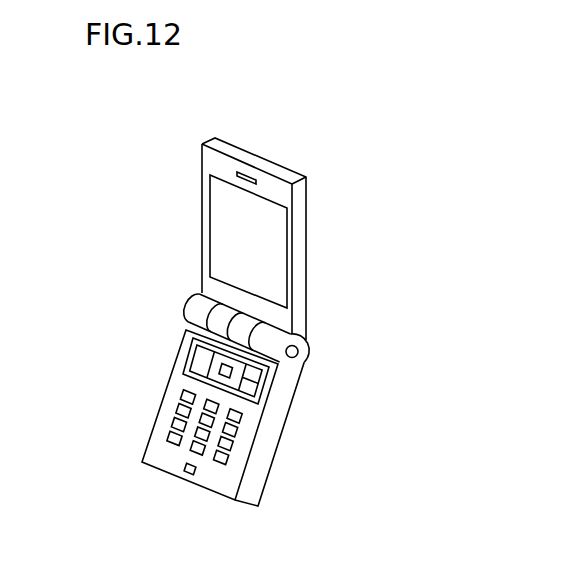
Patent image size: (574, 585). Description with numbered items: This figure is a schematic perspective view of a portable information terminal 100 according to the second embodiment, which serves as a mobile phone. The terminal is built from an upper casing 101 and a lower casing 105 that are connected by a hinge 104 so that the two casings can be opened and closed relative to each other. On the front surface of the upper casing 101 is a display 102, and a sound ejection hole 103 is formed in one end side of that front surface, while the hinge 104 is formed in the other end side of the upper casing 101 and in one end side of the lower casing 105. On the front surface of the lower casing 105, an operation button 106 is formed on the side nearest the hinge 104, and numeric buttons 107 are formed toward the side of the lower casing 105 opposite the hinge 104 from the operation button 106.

The portable information terminal 100 is at (366, 119).
The upper casing 101 is at (292, 176).
The display 102 is at (228, 233).
The sound ejection hole 103 is at (247, 172).
The hinge 104 is at (298, 352).
The lower casing 105 is at (275, 417).
The operation button 106 is at (213, 368).
The numeric button 107 is at (182, 395).